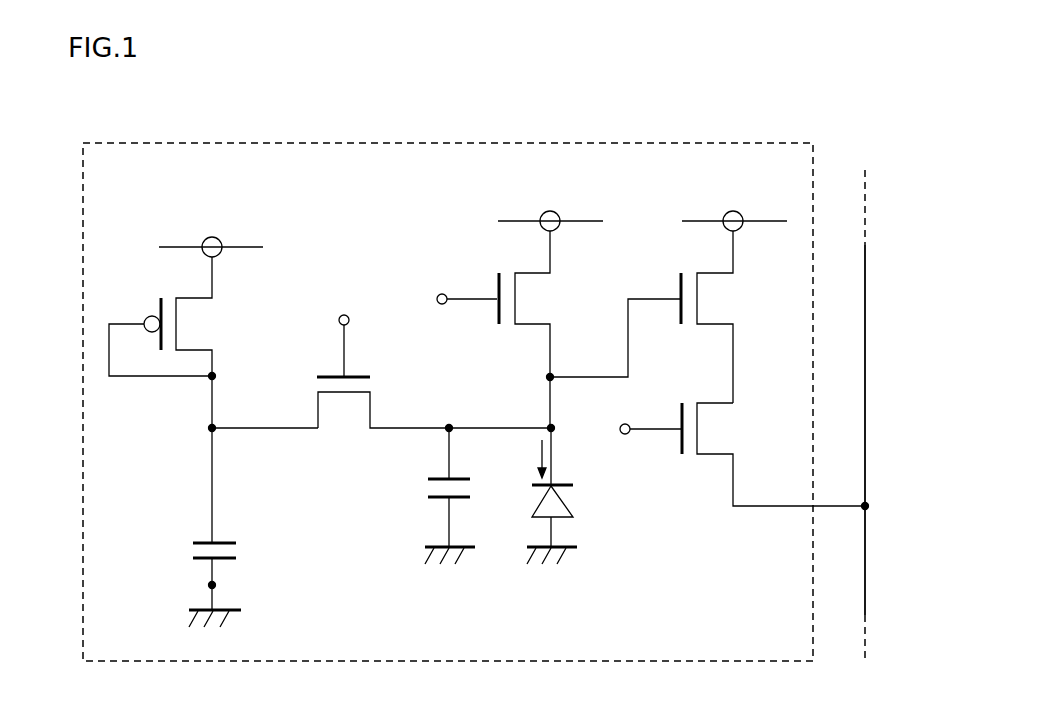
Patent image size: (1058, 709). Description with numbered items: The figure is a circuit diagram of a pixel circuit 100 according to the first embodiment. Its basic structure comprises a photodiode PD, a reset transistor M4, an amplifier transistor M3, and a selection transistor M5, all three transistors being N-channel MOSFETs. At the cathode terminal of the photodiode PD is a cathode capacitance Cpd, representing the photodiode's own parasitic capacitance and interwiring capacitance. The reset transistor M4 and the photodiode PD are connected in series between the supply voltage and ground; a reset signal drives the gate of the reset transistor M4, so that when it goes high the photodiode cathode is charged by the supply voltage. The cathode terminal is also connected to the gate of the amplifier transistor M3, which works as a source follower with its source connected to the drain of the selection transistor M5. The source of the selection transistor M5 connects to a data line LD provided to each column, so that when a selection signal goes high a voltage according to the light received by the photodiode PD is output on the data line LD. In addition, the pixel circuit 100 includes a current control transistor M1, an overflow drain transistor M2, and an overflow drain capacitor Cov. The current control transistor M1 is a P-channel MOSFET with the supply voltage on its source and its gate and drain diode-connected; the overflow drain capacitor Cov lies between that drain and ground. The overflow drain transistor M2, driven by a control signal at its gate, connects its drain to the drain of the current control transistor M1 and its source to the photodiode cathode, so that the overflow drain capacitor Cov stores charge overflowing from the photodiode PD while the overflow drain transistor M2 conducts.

The pixel circuit 100 is at (653, 142).
The data line LD is at (866, 348).
The current control transistor M1 is at (186, 299).
The overflow drain transistor M2 is at (383, 374).
The amplifier transistor M3 is at (734, 297).
The reset transistor M4 is at (495, 309).
The selection transistor M5 is at (718, 454).
The photodiode PD is at (532, 487).
The overflow drain capacitor Cov is at (238, 552).
The cathode capacitance Cpd is at (420, 487).